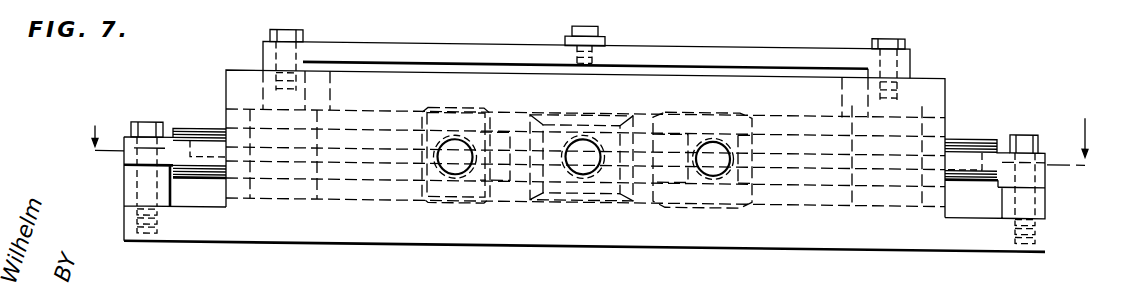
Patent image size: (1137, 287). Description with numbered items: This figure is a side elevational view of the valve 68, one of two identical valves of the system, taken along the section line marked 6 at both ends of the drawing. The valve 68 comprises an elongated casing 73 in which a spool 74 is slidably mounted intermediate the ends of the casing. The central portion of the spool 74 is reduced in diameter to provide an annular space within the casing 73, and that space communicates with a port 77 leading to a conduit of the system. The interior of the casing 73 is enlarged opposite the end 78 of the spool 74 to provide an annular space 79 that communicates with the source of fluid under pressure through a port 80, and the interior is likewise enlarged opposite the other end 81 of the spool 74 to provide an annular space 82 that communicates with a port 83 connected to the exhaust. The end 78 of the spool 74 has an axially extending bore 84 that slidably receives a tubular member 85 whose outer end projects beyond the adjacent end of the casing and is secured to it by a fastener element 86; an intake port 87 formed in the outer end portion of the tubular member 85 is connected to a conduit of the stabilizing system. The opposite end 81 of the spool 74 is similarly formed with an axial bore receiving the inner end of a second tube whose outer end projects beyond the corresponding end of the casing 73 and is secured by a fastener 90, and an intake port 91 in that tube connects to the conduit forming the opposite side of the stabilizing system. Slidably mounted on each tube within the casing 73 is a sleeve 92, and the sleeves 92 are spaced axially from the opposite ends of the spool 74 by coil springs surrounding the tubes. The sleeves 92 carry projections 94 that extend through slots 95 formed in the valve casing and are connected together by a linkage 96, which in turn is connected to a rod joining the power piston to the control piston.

The section line 6- 6 is at (588, 124).
The valve 68 is at (458, 252).
The casing 73 is at (625, 230).
The spool 74 is at (569, 114).
The port 77 is at (583, 157).
The end of the spool 78 is at (743, 116).
The annular space 79 is at (702, 214).
The port 80 is at (713, 158).
The end of the spool 81 is at (520, 113).
The annular space 82 is at (474, 106).
The port 83 is at (455, 157).
The bore 84 is at (795, 175).
The tubular member 85 is at (825, 172).
The fastener element 86 is at (1027, 124).
The intake port 87 is at (982, 144).
The fastener 90 is at (150, 106).
The intake port 91 is at (205, 100).
The sleeve 92 is at (288, 186).
The projection 94 is at (266, 63).
The slot 95 is at (332, 100).
The linkage 96 is at (437, 48).